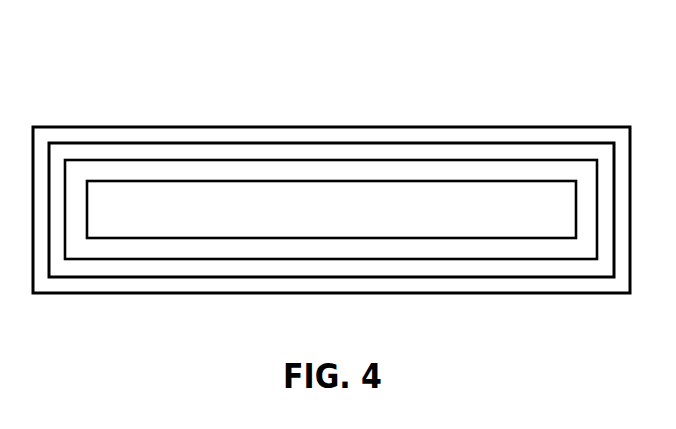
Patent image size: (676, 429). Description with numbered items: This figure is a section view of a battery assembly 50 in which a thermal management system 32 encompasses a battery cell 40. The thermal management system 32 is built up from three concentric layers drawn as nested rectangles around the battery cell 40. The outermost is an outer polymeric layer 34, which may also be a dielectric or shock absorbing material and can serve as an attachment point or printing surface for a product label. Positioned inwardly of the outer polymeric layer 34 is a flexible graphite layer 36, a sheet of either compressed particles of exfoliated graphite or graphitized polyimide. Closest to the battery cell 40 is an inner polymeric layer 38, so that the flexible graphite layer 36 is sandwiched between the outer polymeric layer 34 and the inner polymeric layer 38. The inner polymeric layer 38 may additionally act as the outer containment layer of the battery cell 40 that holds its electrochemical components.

The battery assembly 50 is at (331, 152).
The thermal management system 32 is at (577, 50).
The outer polymeric layer 34 is at (363, 135).
The flexible graphite layer 36 is at (290, 152).
The inner polymeric layer 38 is at (250, 170).
The battery cell 40 is at (337, 219).